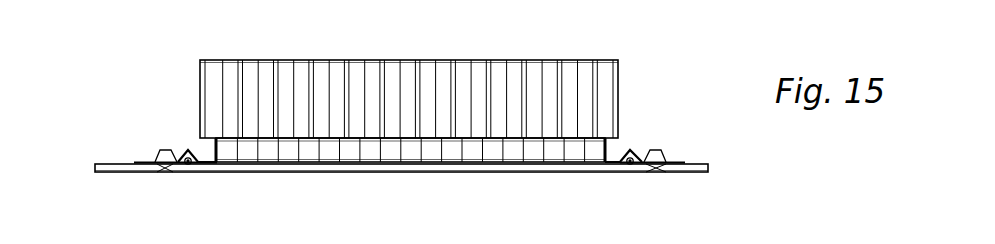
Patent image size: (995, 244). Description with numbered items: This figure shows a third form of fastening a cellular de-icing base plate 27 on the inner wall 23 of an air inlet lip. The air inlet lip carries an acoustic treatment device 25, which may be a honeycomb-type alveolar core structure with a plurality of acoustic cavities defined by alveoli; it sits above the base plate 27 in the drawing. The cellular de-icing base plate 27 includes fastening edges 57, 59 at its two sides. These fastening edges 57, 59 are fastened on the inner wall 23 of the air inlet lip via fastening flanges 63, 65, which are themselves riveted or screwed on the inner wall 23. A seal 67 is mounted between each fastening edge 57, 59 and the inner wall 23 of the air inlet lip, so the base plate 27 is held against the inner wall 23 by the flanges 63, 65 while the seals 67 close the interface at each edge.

The inner wall 23 is at (668, 172).
The acoustic treatment device 25 is at (283, 55).
The cellular de-icing base plate 27 is at (196, 153).
The fastening edge 57 is at (212, 146).
The fastening edge 59 is at (622, 156).
The fastening flange 63 is at (134, 162).
The fastening flange 65 is at (685, 162).
The seal 67 is at (188, 165).